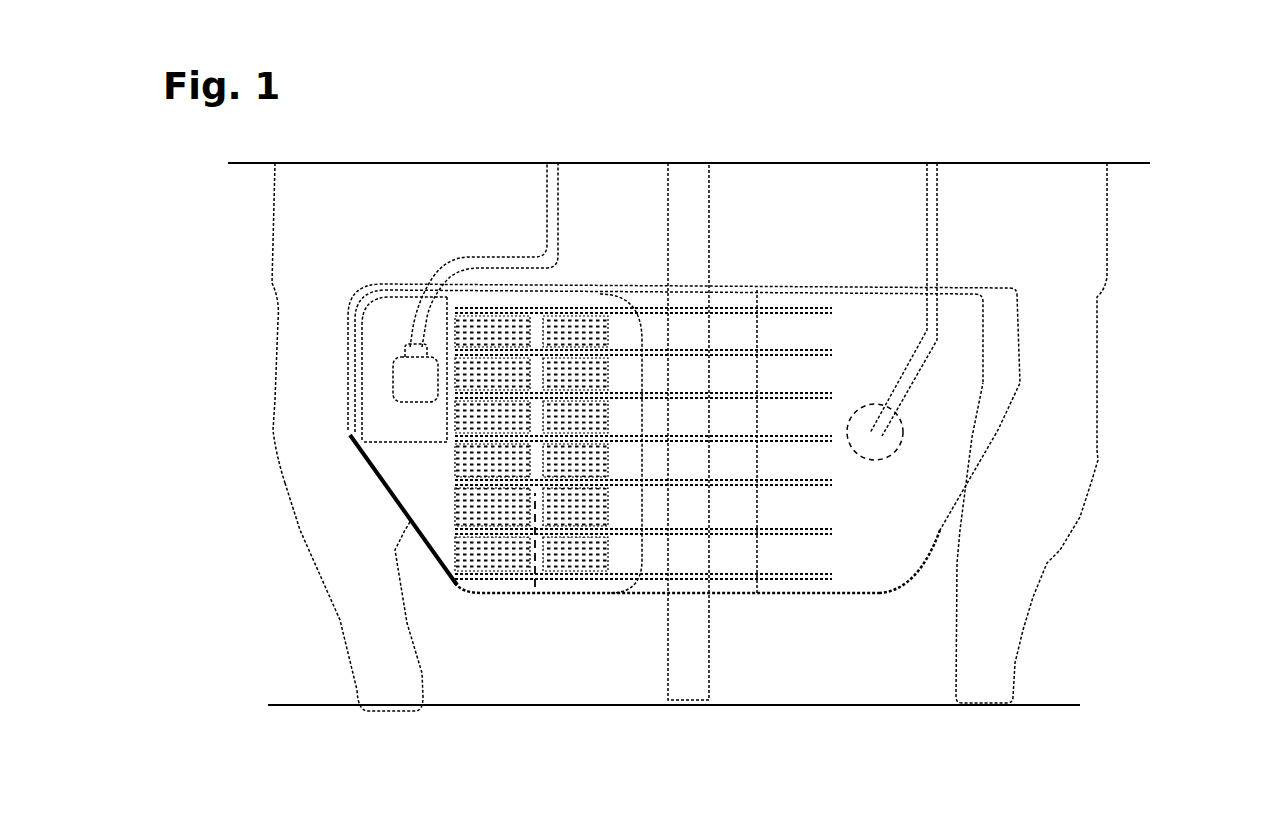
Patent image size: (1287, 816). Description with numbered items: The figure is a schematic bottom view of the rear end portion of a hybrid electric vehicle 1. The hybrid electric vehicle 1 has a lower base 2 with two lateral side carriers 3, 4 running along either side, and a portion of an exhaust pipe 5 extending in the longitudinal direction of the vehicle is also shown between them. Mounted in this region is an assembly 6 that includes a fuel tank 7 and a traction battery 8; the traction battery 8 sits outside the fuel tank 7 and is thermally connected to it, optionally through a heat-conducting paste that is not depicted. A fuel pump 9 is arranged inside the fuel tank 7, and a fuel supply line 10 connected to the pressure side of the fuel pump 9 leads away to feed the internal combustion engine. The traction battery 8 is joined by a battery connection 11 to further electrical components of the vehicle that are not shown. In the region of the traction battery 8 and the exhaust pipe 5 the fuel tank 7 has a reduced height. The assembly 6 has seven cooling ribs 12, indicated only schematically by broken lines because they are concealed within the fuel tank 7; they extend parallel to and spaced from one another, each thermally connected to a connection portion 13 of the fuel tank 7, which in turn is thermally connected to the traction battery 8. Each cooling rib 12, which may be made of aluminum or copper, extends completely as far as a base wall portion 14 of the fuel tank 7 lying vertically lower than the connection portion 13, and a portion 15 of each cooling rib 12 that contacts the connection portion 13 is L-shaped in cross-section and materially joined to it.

The hybrid electric vehicle 1 is at (1124, 598).
The lower base 2 is at (819, 203).
The lateral side carrier 3 is at (323, 517).
The lateral side carrier 4 is at (1038, 499).
The exhaust pipe 5 is at (695, 663).
The assembly 6 is at (1000, 344).
The fuel tank 7 is at (883, 572).
The traction battery 8 is at (400, 468).
The fuel pump 9 is at (903, 439).
The fuel supply line 10 is at (935, 227).
The battery connection 11 is at (400, 378).
The cooling rib 12 is at (797, 580).
The connection portion 13 is at (535, 587).
The base wall portion 14 is at (795, 368).
The portion of the cooling rib 15 is at (565, 310).